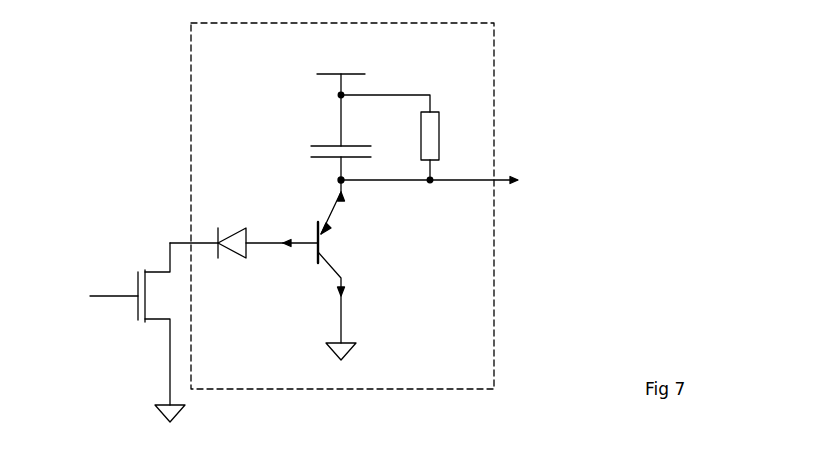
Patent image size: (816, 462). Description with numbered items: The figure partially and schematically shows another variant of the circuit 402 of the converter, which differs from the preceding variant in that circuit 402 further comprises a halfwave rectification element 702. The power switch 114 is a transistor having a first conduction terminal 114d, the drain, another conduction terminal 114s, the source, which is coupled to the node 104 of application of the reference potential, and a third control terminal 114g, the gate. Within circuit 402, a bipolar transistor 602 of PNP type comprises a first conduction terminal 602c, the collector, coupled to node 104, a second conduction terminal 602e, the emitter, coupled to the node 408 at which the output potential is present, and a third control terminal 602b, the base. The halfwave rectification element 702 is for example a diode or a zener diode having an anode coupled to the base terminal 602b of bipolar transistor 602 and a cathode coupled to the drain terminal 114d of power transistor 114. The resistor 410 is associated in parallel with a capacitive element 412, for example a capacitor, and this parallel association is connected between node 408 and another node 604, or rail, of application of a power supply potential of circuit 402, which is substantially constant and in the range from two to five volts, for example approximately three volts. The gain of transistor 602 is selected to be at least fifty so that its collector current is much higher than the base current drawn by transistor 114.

The circuit 402 is at (494, 121).
The node 604 is at (352, 76).
The resistor 410 is at (440, 131).
The capacitive element 412 is at (325, 138).
The node 408 is at (338, 180).
The bipolar transistor 602 is at (361, 266).
The second conduction terminal 602e is at (346, 190).
The third control terminal 602b is at (304, 249).
The first conduction terminal 602c is at (343, 282).
The halfwave rectification element 702 is at (224, 230).
The switch 114 is at (99, 309).
The first conduction terminal 114d is at (166, 258).
The third control terminal 114g is at (110, 299).
The other conduction terminal 114s is at (166, 360).
The node 104 is at (160, 410).